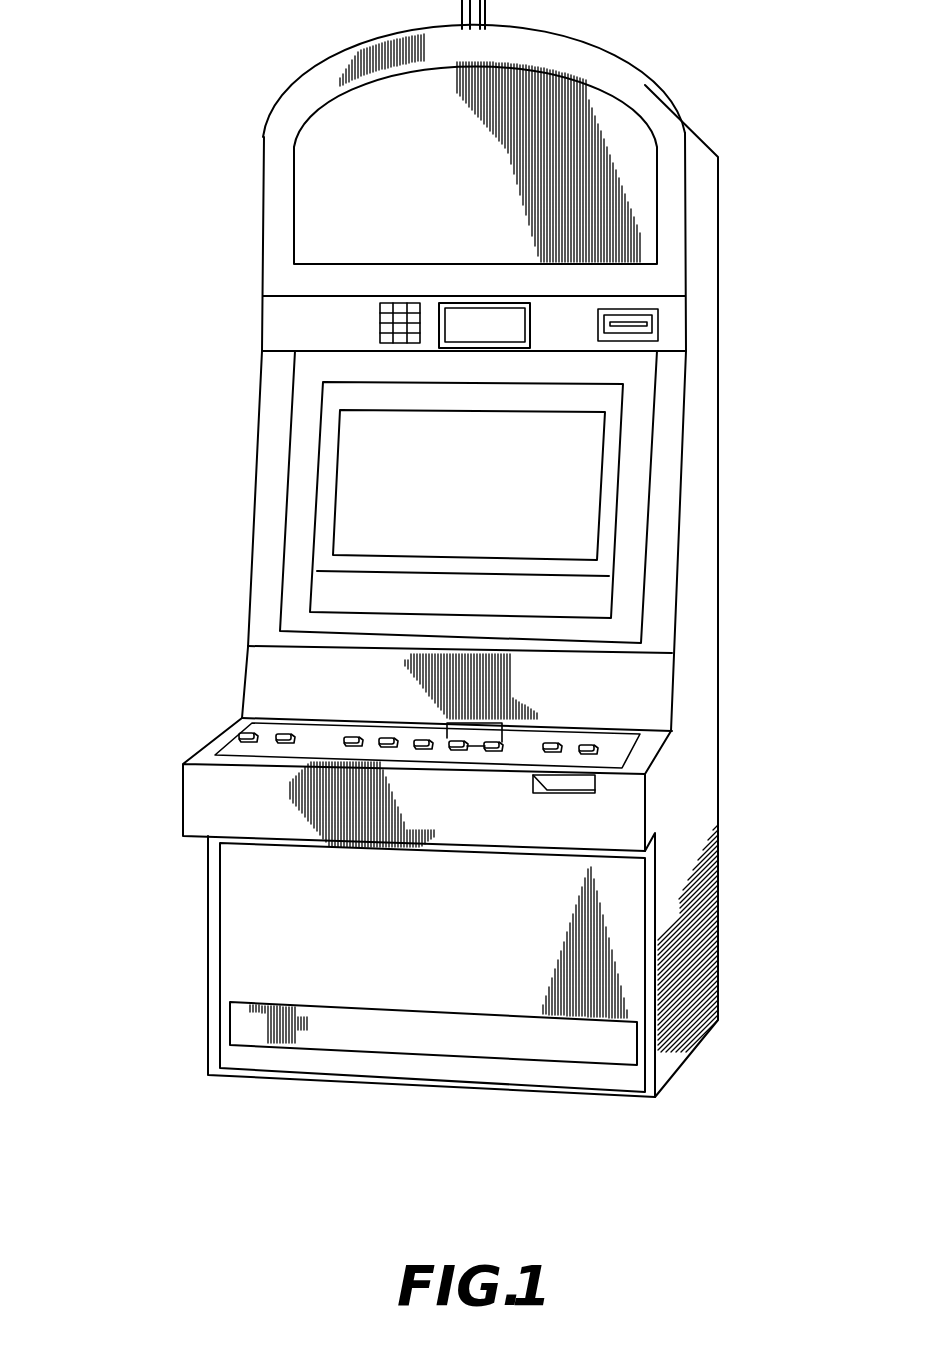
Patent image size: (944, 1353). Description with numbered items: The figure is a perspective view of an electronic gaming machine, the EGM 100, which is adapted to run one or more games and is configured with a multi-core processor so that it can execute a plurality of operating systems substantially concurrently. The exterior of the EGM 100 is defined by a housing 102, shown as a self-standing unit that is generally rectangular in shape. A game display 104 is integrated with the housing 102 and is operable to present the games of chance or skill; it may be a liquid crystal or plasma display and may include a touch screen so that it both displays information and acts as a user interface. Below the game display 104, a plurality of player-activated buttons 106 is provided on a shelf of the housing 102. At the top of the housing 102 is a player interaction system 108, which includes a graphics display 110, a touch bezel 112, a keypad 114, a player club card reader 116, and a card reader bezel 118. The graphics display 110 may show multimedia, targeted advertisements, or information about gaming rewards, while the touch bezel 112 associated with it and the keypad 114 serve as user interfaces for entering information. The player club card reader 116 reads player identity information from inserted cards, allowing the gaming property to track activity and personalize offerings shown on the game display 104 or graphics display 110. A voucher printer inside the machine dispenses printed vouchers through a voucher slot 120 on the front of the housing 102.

The EGM 100 is at (170, 410).
The housing 102 is at (708, 425).
The game display 104 is at (608, 488).
The player-activated buttons 106 is at (428, 736).
The player interaction system 108 is at (270, 323).
The graphics display 110 is at (510, 329).
The touch bezel 112 is at (532, 312).
The keypad 114 is at (394, 300).
The player club card reader 116 is at (650, 325).
The card reader bezel 118 is at (641, 305).
The voucher slot 120 is at (612, 795).